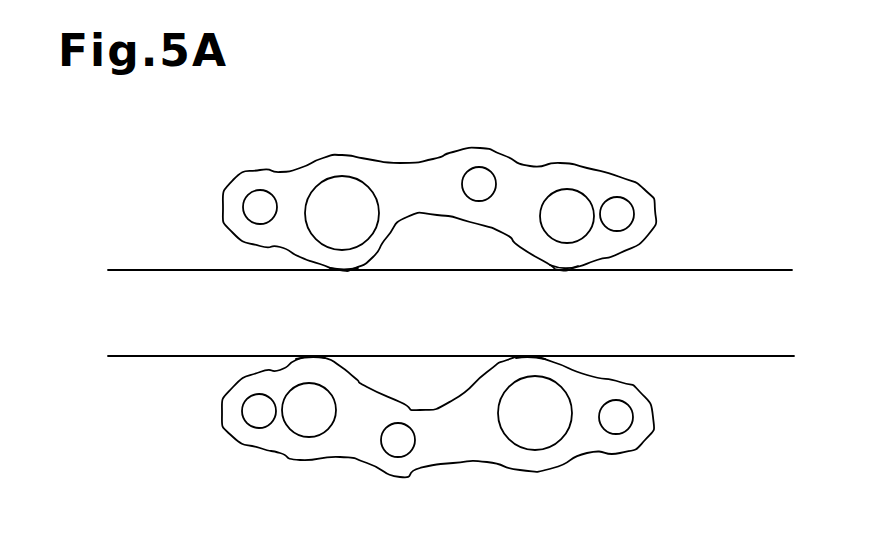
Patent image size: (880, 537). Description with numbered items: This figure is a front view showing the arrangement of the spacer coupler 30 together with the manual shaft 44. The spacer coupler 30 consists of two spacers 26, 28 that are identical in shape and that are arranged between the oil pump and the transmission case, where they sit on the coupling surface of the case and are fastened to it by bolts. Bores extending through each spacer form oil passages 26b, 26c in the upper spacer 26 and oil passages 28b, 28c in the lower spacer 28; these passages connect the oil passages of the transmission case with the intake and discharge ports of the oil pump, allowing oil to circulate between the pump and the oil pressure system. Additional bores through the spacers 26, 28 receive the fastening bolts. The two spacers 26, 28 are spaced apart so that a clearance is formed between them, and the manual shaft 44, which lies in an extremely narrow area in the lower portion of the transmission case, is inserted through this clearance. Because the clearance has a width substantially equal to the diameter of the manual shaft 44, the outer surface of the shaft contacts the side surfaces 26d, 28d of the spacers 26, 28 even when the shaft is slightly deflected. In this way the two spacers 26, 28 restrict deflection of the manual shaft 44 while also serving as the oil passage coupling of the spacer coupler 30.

The spacer 26 is at (565, 162).
The oil passage 26b is at (346, 197).
The oil passage 26c is at (573, 207).
The side surface 26d is at (567, 270).
The spacer 28 is at (635, 452).
The oil passage 28b is at (542, 432).
The oil passage 28c is at (310, 423).
The side surface 28d is at (537, 353).
The spacer coupler 30 is at (734, 151).
The manual shaft 44 is at (740, 267).